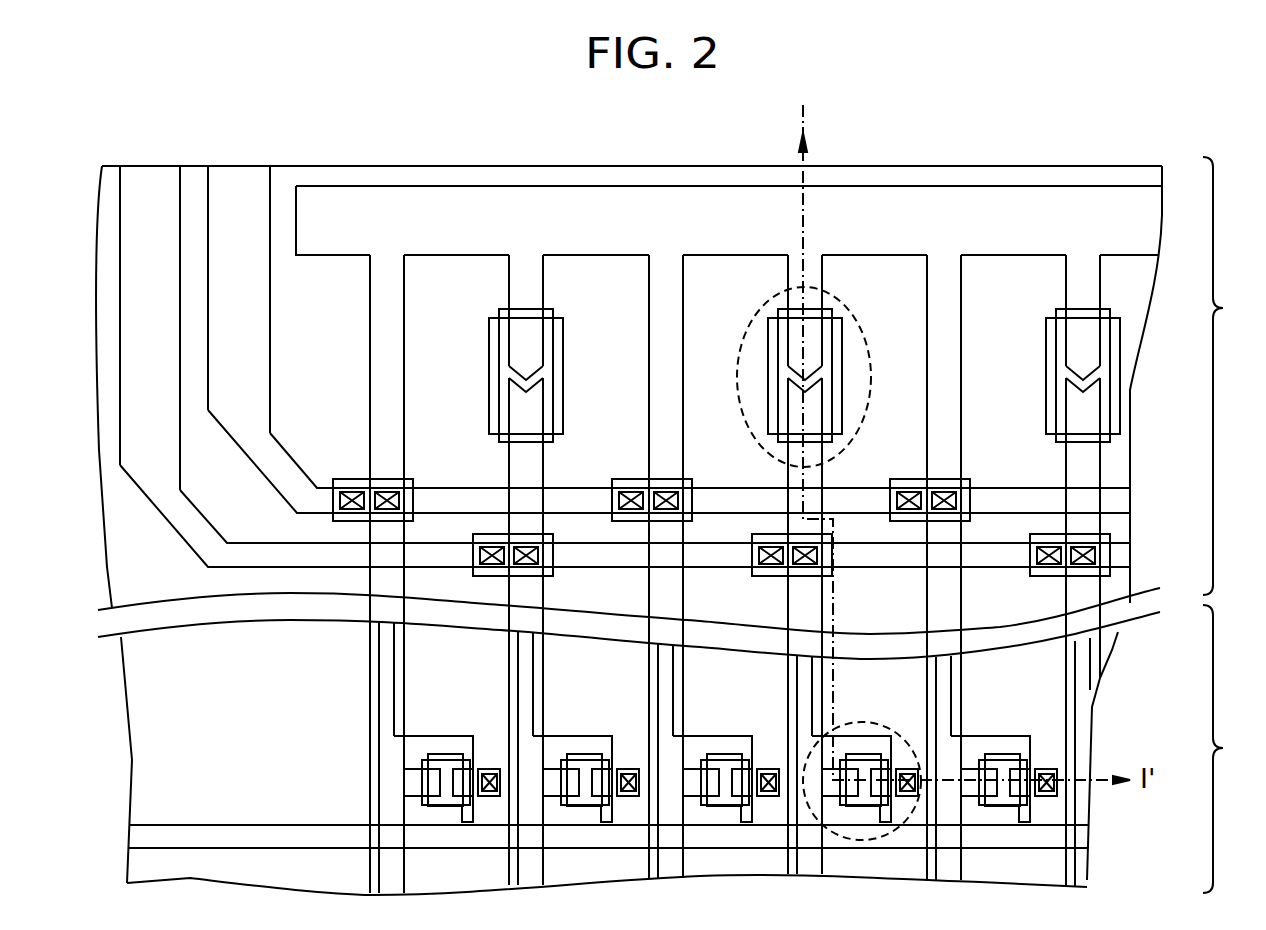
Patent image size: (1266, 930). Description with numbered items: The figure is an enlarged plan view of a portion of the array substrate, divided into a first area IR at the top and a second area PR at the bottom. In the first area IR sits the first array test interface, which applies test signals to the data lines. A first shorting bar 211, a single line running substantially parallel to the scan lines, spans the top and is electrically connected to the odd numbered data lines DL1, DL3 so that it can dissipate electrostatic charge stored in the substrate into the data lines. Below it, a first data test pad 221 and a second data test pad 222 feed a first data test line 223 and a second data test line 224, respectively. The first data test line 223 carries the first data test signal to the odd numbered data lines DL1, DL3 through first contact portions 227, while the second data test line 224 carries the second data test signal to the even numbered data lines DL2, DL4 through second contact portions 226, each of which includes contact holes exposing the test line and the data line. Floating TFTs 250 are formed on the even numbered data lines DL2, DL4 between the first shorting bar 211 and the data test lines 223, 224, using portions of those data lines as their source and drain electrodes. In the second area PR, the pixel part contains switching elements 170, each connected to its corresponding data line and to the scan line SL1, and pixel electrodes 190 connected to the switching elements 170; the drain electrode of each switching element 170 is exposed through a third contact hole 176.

The first shorting bar 211 is at (1106, 198).
The first data test pad 221 is at (240, 190).
The second data test pad 222 is at (153, 190).
The first data test line 223 is at (248, 457).
The second data test line 224 is at (170, 522).
The second contact portion 226 is at (760, 575).
The first contact portion 227 is at (347, 480).
The floating TFT 250 is at (856, 316).
The switching element 170 is at (878, 720).
The third contact hole 176 is at (907, 767).
The pixel electrode 190 is at (855, 690).
The first gate line SL1 is at (236, 838).
The odd numbered data line DL1 is at (406, 277).
The even numbered data line DL2 is at (543, 277).
The odd numbered data line DL3 is at (683, 277).
The even numbered data line DL4 is at (822, 272).
The first area IR is at (1229, 376).
The second area PR is at (1229, 749).